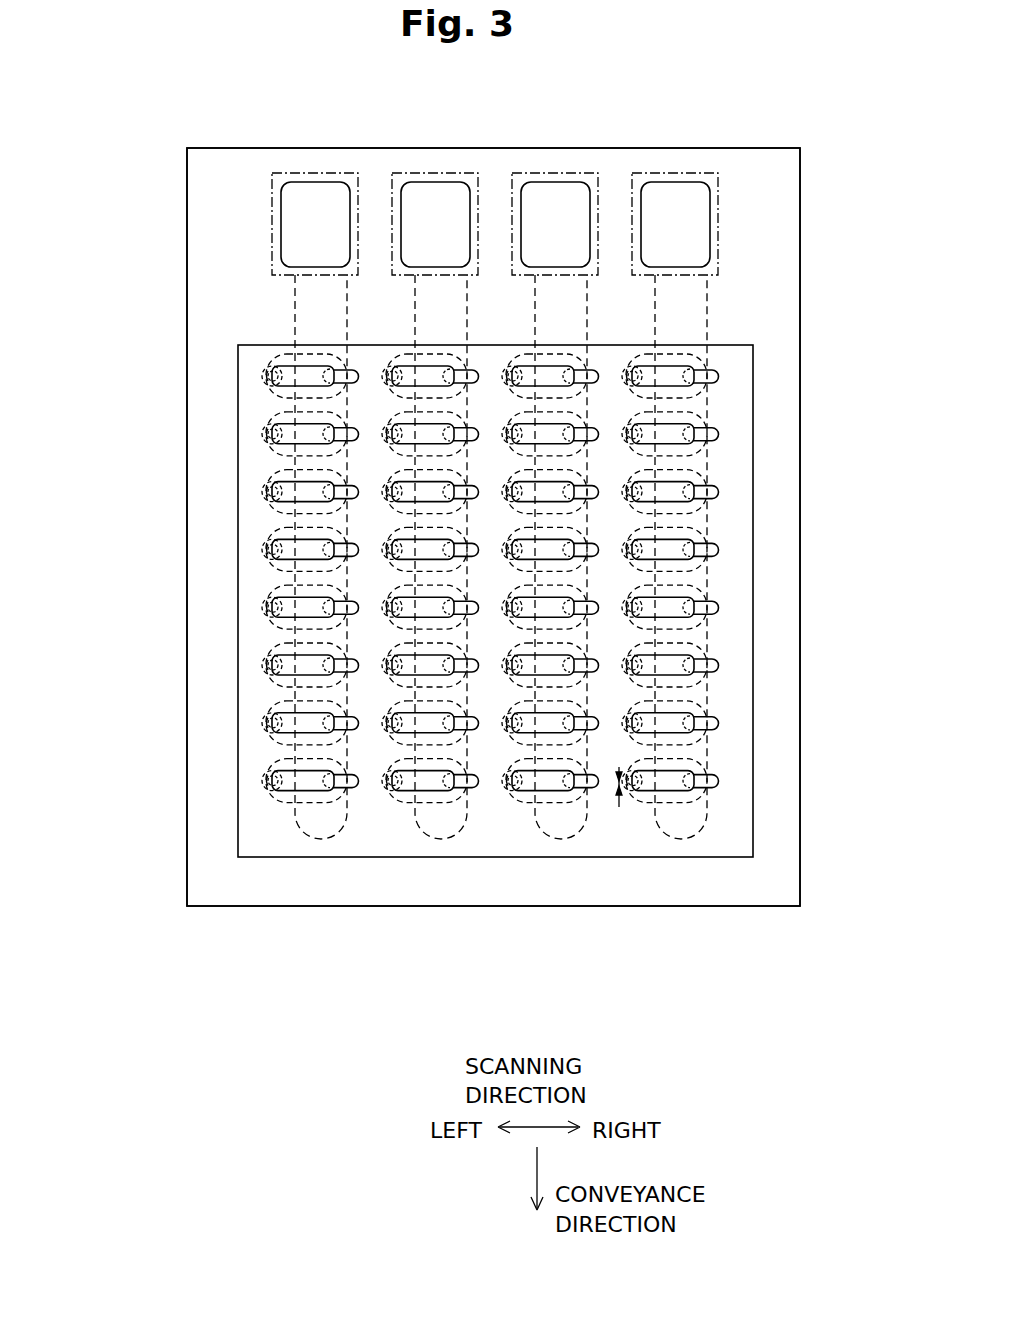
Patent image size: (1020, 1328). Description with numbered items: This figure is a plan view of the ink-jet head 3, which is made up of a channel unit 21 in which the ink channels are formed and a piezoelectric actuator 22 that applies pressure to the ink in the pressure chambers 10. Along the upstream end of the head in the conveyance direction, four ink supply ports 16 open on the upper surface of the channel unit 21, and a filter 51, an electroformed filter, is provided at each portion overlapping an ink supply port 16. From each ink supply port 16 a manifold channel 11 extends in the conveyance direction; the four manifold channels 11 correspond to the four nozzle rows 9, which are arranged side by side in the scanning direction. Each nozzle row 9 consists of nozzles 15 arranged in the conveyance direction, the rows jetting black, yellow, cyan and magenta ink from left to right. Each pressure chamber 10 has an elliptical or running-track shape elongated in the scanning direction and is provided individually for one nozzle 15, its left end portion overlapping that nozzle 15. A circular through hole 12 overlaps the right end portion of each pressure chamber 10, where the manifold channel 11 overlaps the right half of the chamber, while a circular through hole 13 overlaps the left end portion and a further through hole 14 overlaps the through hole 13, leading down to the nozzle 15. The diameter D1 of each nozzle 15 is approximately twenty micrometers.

The ink-jet head 3 is at (790, 135).
The channel unit 21 is at (187, 907).
The piezoelectric actuator 22 is at (232, 349).
The filter 51 is at (272, 212).
The ink supply port 16 is at (310, 212).
The pressure chamber 10 is at (278, 800).
The manifold channel 11 is at (292, 692).
The nozzle row 9 is at (262, 795).
The through hole 12 is at (338, 798).
The through hole 13 is at (268, 768).
The nozzle 15 is at (273, 782).
The through hole 14 is at (268, 800).
The diameter of nozzle D1 is at (618, 783).